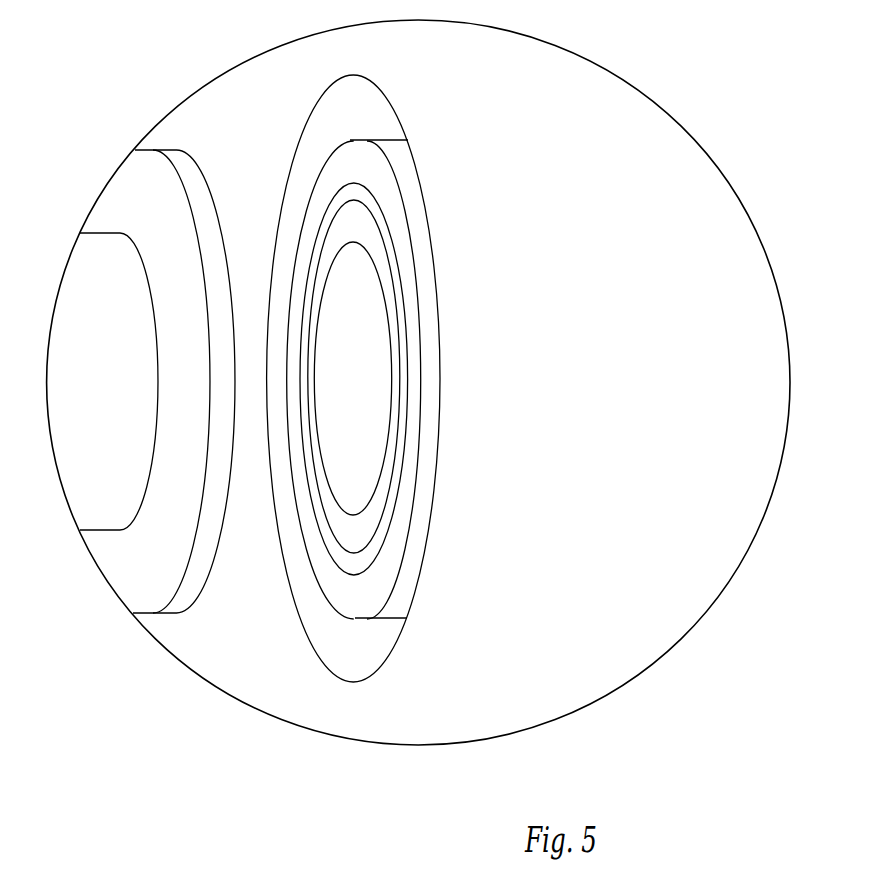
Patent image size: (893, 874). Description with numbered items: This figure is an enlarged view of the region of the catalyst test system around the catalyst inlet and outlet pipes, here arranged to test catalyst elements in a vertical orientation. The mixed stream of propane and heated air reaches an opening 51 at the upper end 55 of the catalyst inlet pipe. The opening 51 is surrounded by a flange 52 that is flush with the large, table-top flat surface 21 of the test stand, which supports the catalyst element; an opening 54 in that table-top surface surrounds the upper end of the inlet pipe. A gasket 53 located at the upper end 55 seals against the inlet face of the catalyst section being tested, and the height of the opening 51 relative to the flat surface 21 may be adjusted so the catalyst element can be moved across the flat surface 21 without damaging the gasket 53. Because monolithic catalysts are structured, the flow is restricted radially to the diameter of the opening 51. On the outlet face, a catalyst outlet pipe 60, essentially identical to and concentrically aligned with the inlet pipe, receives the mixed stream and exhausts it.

The flat surface 21 is at (619, 384).
The catalyst outlet pipe 60 is at (168, 245).
The opening 51 is at (353, 372).
The flange 52 is at (348, 158).
The gasket 53 is at (350, 562).
The opening in the table-top surface 54 is at (348, 655).
The upper end 55 is at (382, 620).